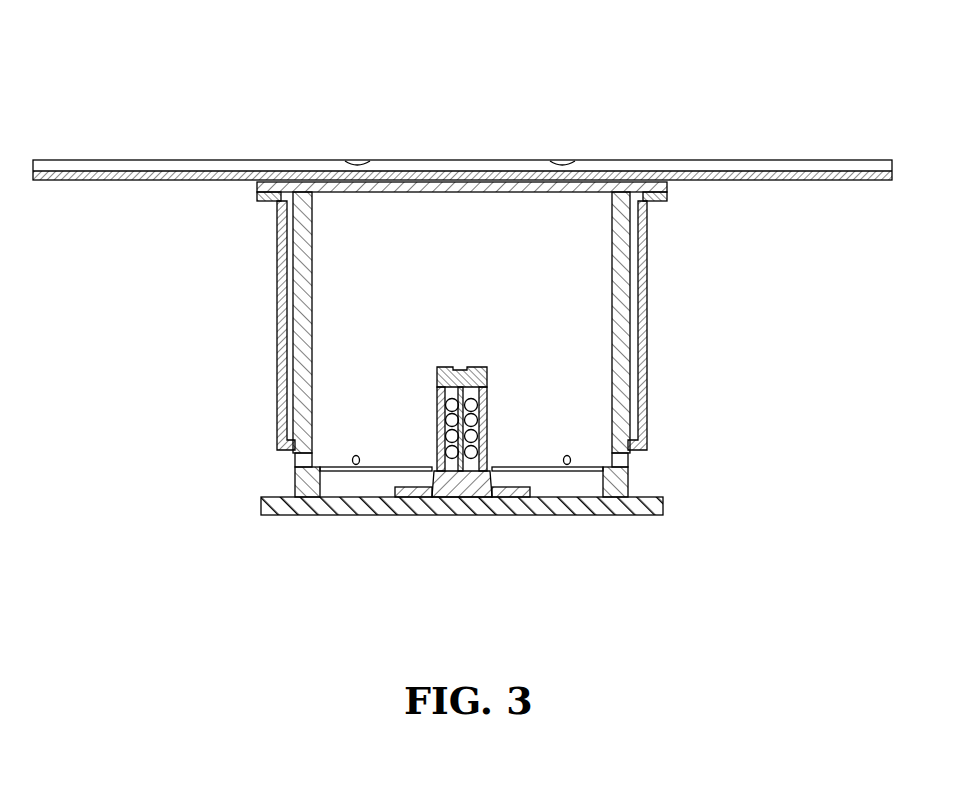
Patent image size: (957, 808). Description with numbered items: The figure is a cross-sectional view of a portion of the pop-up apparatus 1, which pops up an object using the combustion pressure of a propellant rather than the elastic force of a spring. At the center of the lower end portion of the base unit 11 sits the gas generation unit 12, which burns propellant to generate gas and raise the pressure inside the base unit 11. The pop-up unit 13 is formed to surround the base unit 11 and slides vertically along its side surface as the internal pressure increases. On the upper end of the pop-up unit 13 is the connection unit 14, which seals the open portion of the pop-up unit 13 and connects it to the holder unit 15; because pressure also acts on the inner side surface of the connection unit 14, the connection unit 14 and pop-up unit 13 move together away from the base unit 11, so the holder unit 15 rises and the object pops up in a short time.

The pop-up apparatus 1 is at (786, 61).
The base unit 11 is at (630, 372).
The gas generation unit 12 is at (466, 516).
The pop-up unit 13 is at (647, 316).
The connection unit 14 is at (667, 192).
The holder unit 15 is at (185, 160).